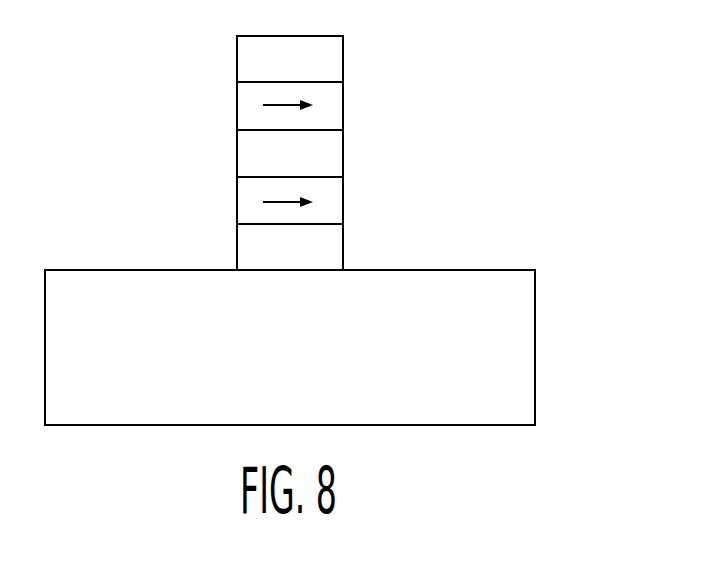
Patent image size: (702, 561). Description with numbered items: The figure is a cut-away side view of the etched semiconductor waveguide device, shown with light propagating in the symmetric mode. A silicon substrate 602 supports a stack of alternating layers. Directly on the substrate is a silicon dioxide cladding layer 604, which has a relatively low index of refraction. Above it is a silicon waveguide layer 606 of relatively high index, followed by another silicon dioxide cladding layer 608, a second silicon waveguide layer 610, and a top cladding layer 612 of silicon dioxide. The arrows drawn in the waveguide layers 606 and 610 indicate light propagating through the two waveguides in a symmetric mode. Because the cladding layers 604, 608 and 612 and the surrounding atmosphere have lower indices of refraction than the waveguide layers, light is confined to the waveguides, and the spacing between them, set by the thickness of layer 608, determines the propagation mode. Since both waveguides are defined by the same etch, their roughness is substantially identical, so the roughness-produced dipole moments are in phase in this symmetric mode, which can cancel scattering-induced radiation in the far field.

The silicon substrate 602 is at (526, 355).
The cladding layer 604 is at (329, 253).
The waveguide layer 606 is at (333, 203).
The cladding layer 608 is at (329, 156).
The waveguide layer 610 is at (328, 107).
The cladding layer 612 is at (330, 52).